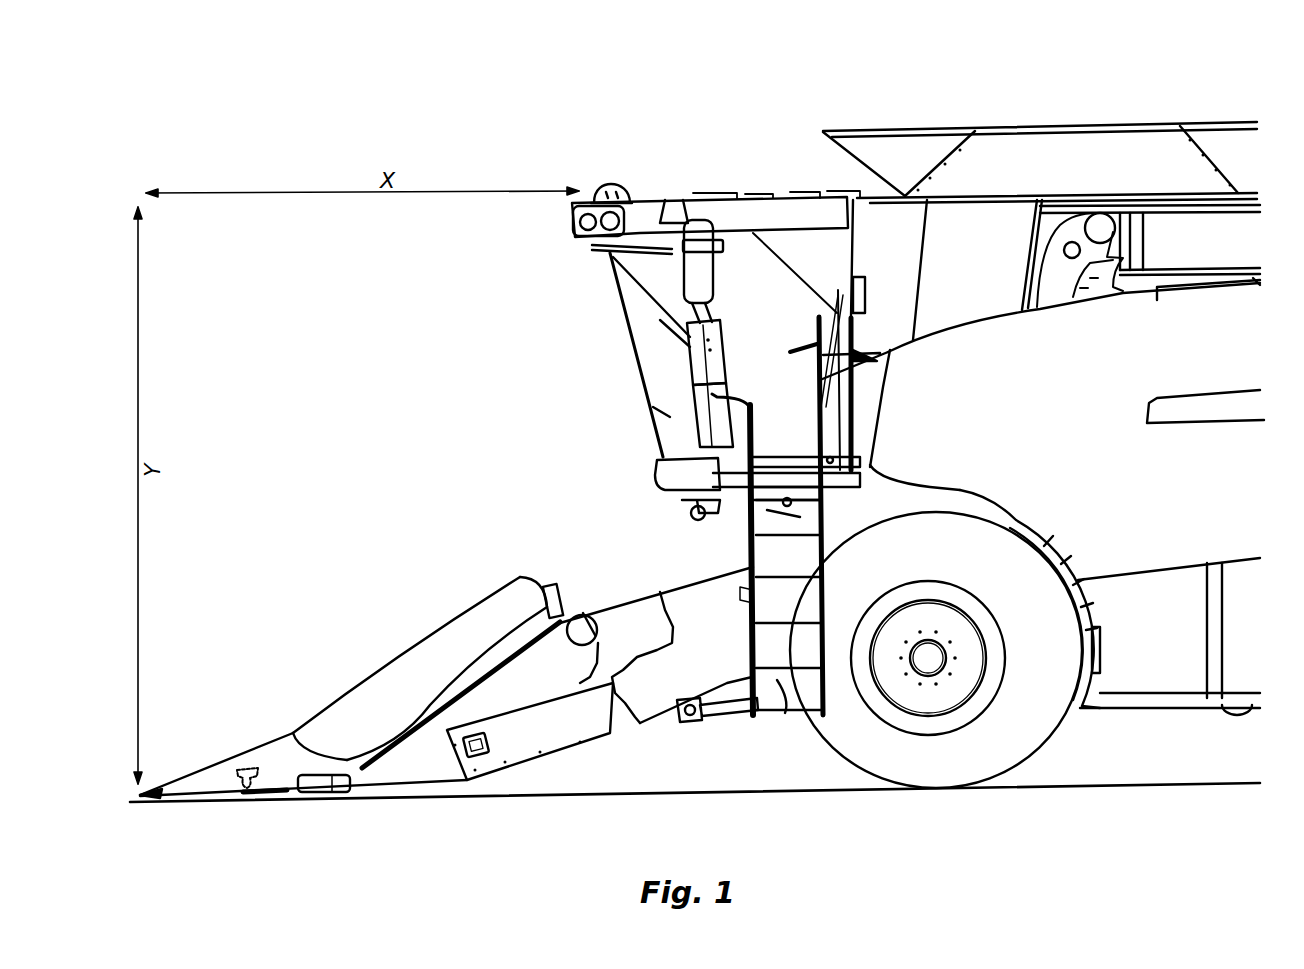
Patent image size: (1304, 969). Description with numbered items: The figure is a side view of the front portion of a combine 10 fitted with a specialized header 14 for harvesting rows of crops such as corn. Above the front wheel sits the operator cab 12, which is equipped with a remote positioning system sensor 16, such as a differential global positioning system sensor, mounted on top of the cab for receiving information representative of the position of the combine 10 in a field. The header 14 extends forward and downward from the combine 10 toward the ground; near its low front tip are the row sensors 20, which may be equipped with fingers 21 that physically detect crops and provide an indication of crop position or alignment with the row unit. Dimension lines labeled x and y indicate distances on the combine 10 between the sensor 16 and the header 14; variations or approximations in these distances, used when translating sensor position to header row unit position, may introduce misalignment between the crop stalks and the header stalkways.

The combine 10 is at (1192, 86).
The operator cab 12 is at (776, 193).
The header 14 is at (370, 675).
The remote positioning system sensor 16 is at (610, 182).
The row sensor 20 is at (246, 765).
The finger 21 is at (272, 803).